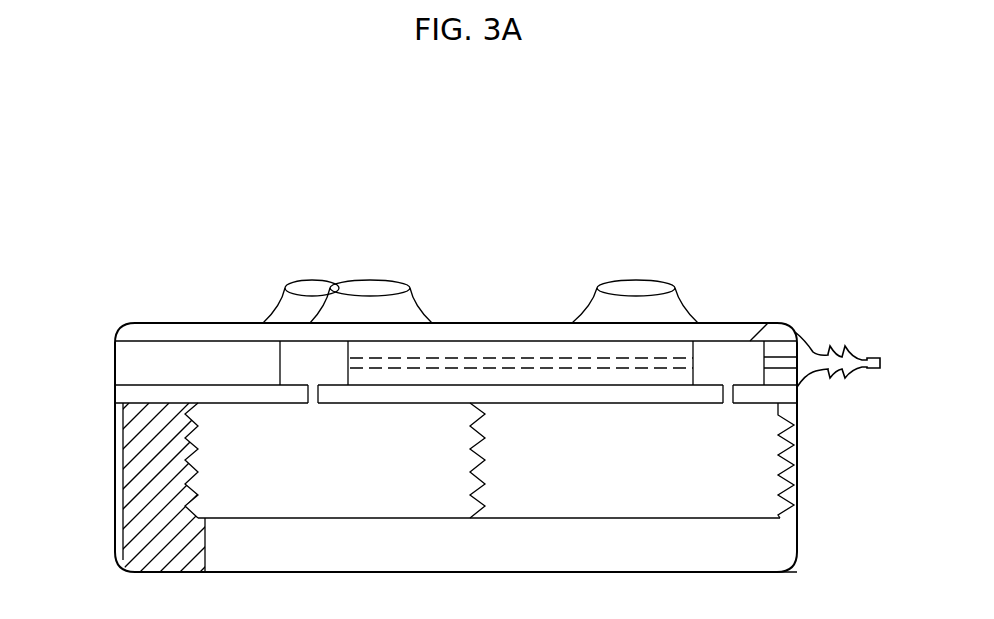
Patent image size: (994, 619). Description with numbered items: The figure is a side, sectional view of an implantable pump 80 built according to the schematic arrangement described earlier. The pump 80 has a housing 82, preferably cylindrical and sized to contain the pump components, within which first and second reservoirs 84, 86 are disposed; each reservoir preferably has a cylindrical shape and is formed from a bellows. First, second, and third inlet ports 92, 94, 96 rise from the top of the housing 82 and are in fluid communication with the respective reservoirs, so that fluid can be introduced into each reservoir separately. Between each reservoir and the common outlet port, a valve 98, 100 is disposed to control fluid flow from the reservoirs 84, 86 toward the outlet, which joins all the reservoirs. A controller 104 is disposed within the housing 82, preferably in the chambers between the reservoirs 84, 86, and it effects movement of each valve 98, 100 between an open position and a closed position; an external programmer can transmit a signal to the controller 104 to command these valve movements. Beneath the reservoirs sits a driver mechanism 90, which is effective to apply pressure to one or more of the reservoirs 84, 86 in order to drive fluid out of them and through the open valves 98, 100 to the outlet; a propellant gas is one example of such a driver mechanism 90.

The pump 80 is at (166, 146).
The housing 82 is at (114, 357).
The first reservoir 84 is at (314, 467).
The second reservoir 86 is at (612, 467).
The driver mechanism 90 is at (462, 558).
The first inlet port 92 is at (372, 297).
The second inlet port 94 is at (318, 297).
The third inlet port 96 is at (636, 297).
The valve 98 is at (300, 375).
The valve 100 is at (728, 352).
The controller 104 is at (148, 462).